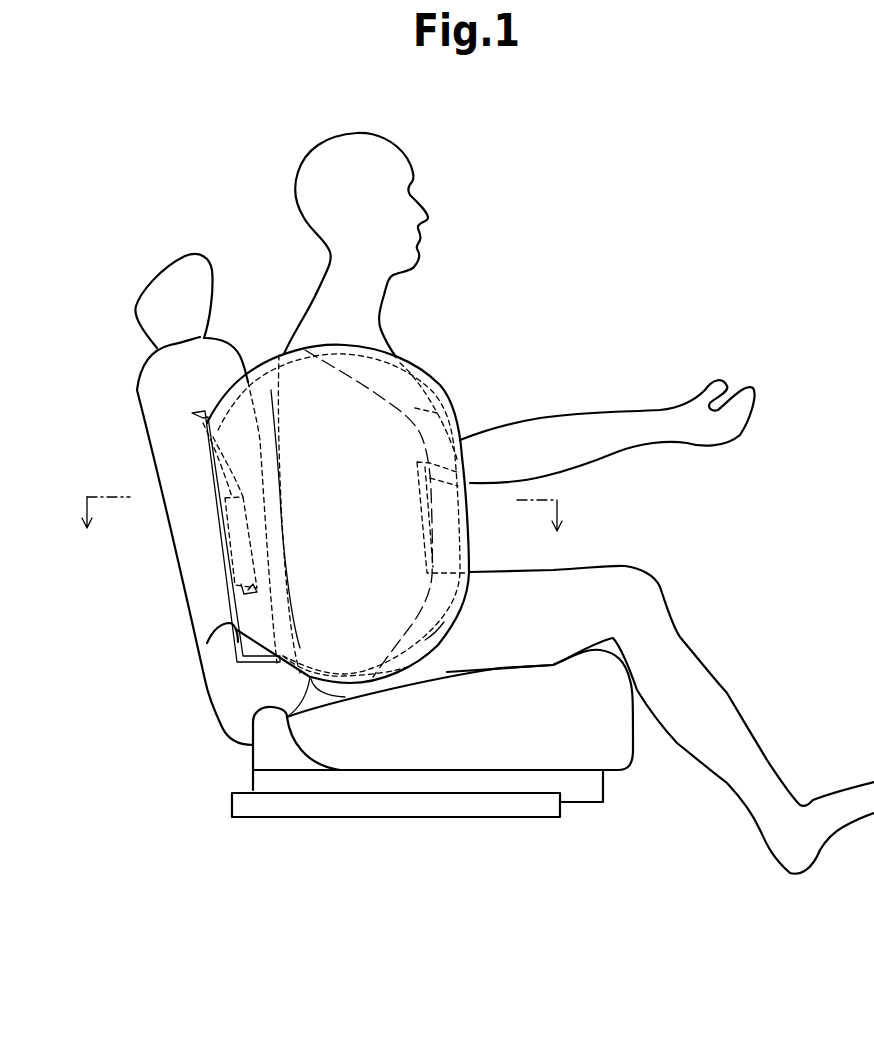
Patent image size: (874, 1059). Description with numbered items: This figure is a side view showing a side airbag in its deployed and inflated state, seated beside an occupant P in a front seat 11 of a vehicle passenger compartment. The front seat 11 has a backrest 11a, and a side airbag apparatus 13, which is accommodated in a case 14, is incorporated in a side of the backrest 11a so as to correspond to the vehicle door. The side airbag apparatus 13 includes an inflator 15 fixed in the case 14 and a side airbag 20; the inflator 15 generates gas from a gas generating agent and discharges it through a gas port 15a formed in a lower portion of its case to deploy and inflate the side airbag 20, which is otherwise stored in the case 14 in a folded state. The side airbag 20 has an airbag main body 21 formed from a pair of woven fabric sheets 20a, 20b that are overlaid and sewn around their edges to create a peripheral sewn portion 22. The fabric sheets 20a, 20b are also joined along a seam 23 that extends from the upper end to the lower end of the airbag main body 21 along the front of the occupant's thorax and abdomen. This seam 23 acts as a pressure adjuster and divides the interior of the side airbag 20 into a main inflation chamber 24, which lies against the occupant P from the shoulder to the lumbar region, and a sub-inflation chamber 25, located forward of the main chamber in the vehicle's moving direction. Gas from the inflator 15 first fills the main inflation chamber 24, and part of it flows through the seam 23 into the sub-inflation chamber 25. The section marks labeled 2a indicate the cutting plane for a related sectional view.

The occupant P is at (310, 132).
The front seat 11 is at (133, 288).
The backrest 11a is at (143, 432).
The side airbag apparatus 13 is at (207, 568).
The case 14 is at (207, 643).
The inflator 15 is at (220, 527).
The gas port 15a is at (223, 588).
The side airbag 20 is at (467, 321).
The fabric sheet 20a is at (479, 681).
The fabric sheet 20b is at (431, 624).
The airbag main body 21 is at (463, 607).
The peripheral sewn portion 22 is at (349, 668).
The seam 23 is at (432, 530).
The main inflation chamber 24 is at (271, 390).
The sub-inflation chamber 25 is at (435, 412).
The section line 2a is at (328, 511).